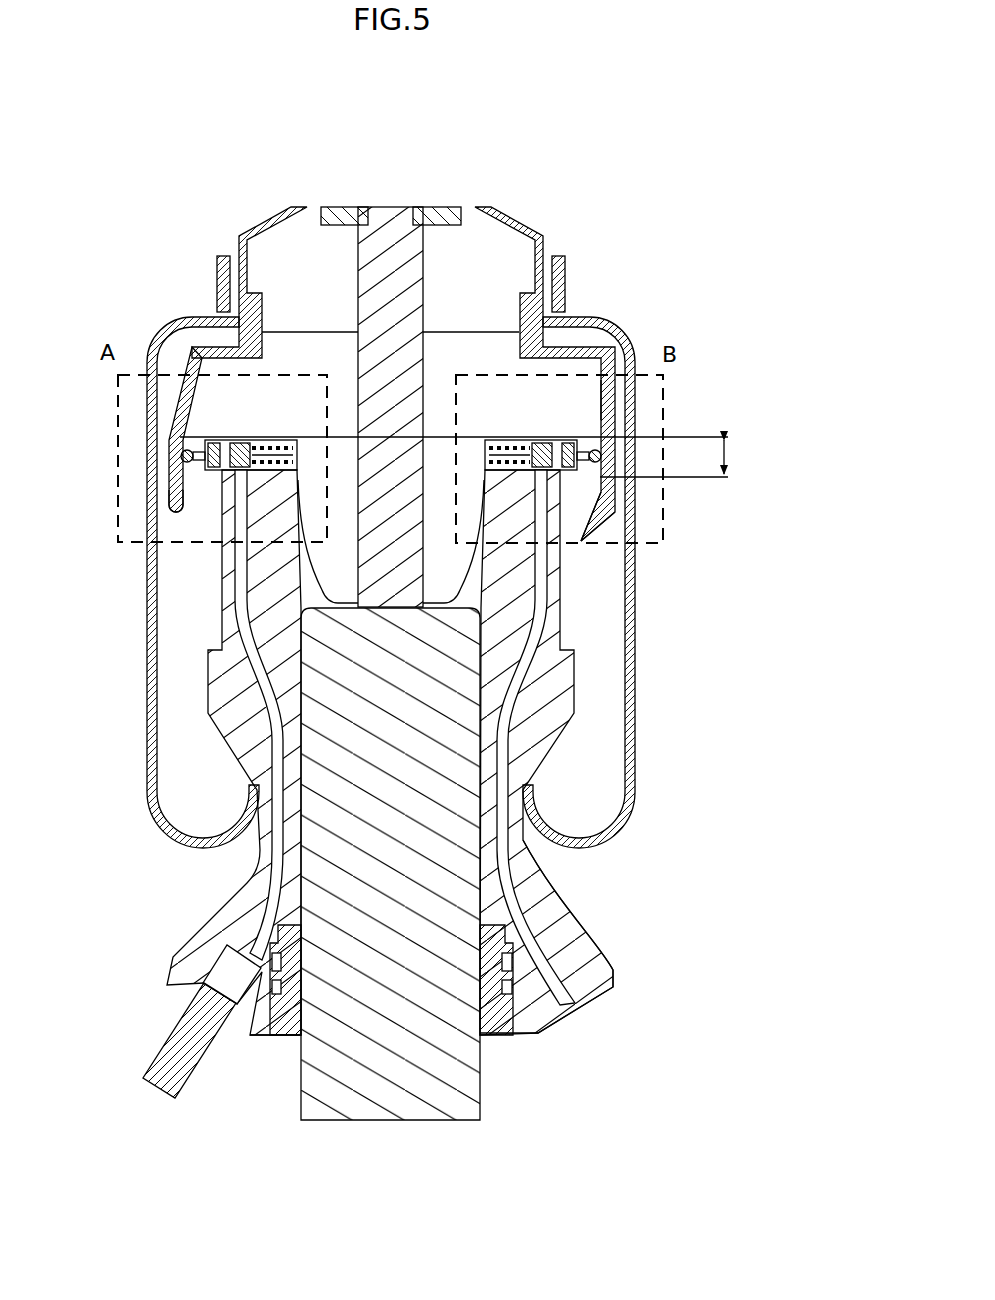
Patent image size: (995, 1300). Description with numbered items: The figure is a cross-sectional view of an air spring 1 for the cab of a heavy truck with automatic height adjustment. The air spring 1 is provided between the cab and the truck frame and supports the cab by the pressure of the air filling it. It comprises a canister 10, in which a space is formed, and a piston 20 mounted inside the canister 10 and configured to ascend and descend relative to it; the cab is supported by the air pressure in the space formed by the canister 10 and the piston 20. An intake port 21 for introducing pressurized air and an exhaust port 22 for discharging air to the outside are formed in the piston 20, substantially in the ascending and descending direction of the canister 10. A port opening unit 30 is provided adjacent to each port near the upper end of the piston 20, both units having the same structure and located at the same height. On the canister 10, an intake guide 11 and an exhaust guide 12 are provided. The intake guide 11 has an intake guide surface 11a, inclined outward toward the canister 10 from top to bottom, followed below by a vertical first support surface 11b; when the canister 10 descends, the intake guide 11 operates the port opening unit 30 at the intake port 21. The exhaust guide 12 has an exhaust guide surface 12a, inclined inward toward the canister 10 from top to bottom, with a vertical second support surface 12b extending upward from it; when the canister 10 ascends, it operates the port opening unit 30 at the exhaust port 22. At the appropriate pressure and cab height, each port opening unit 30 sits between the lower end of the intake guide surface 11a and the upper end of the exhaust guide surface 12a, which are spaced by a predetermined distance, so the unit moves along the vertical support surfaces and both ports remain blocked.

The air spring 1 is at (609, 141).
The canister 10 is at (638, 672).
The intake guide 11 is at (200, 408).
The intake guide surface 11a is at (182, 452).
The first support surface 11b is at (185, 518).
The exhaust guide 12 is at (614, 428).
The exhaust guide surface 12a is at (614, 512).
The second support surface 12b is at (608, 392).
The piston 20 is at (536, 1017).
The intake port 21 is at (243, 602).
The exhaust port 22 is at (541, 602).
The port opening unit 30 is at (276, 428).